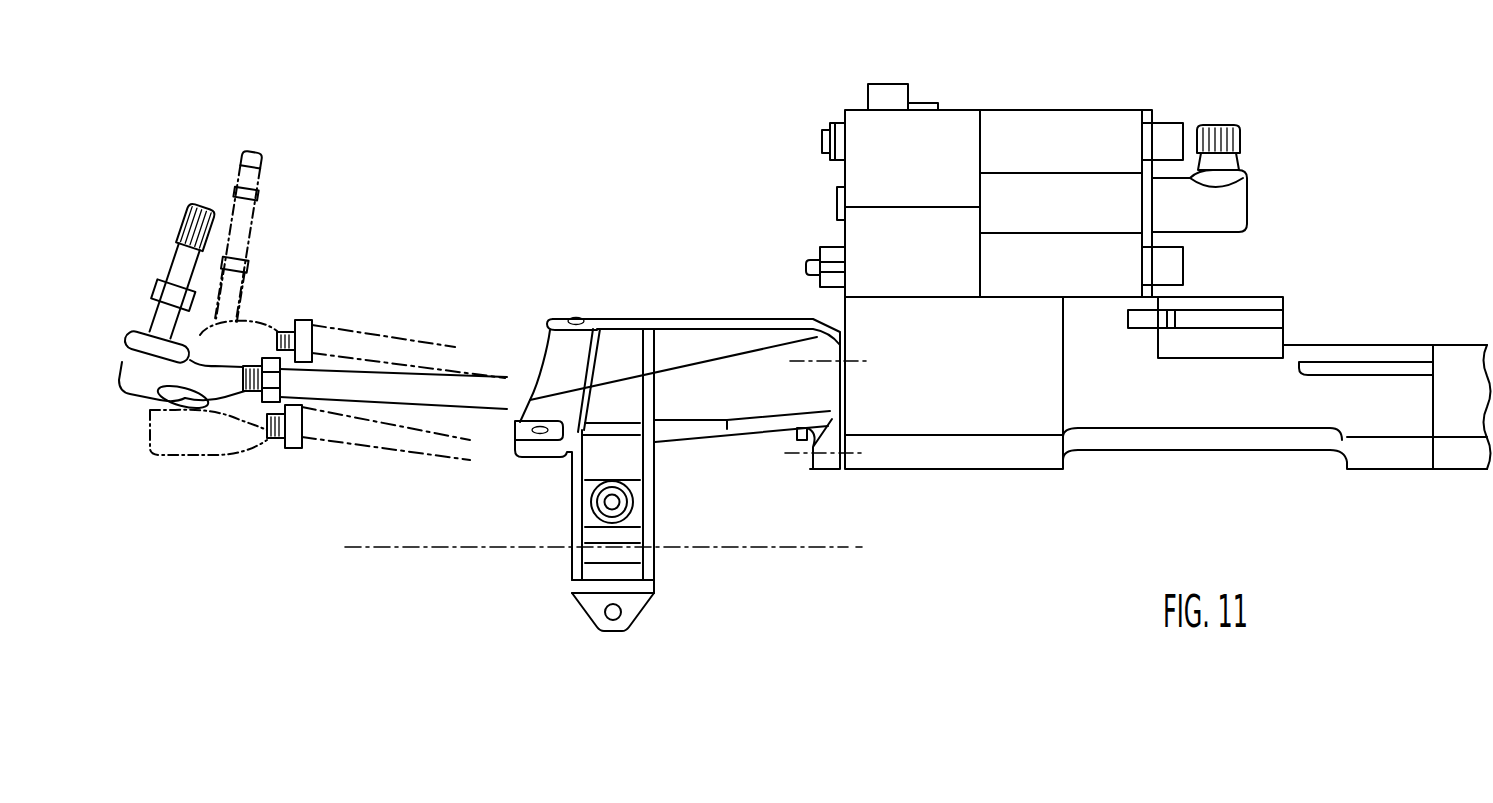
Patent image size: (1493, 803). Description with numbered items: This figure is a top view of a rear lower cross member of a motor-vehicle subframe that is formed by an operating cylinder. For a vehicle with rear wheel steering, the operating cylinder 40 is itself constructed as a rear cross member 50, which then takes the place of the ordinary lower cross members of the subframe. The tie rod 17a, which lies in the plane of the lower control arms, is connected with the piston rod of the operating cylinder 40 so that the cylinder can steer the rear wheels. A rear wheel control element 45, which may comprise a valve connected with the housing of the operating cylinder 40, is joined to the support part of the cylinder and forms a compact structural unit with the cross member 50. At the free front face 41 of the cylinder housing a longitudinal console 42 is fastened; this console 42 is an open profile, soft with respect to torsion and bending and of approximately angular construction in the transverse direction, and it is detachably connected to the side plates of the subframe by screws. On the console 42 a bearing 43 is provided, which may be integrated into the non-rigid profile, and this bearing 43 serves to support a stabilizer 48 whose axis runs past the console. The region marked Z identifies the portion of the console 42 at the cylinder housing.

The tie rod 17a is at (430, 377).
The operating cylinder 40 is at (1311, 406).
The free front face 41 is at (841, 314).
The longitudinal console 42 is at (727, 345).
The bearing 43 is at (636, 510).
The rear wheel control element 45 is at (1098, 111).
The stabilizer 48 is at (827, 550).
The rear cross member 50 is at (1453, 324).
The detail Z is at (641, 304).